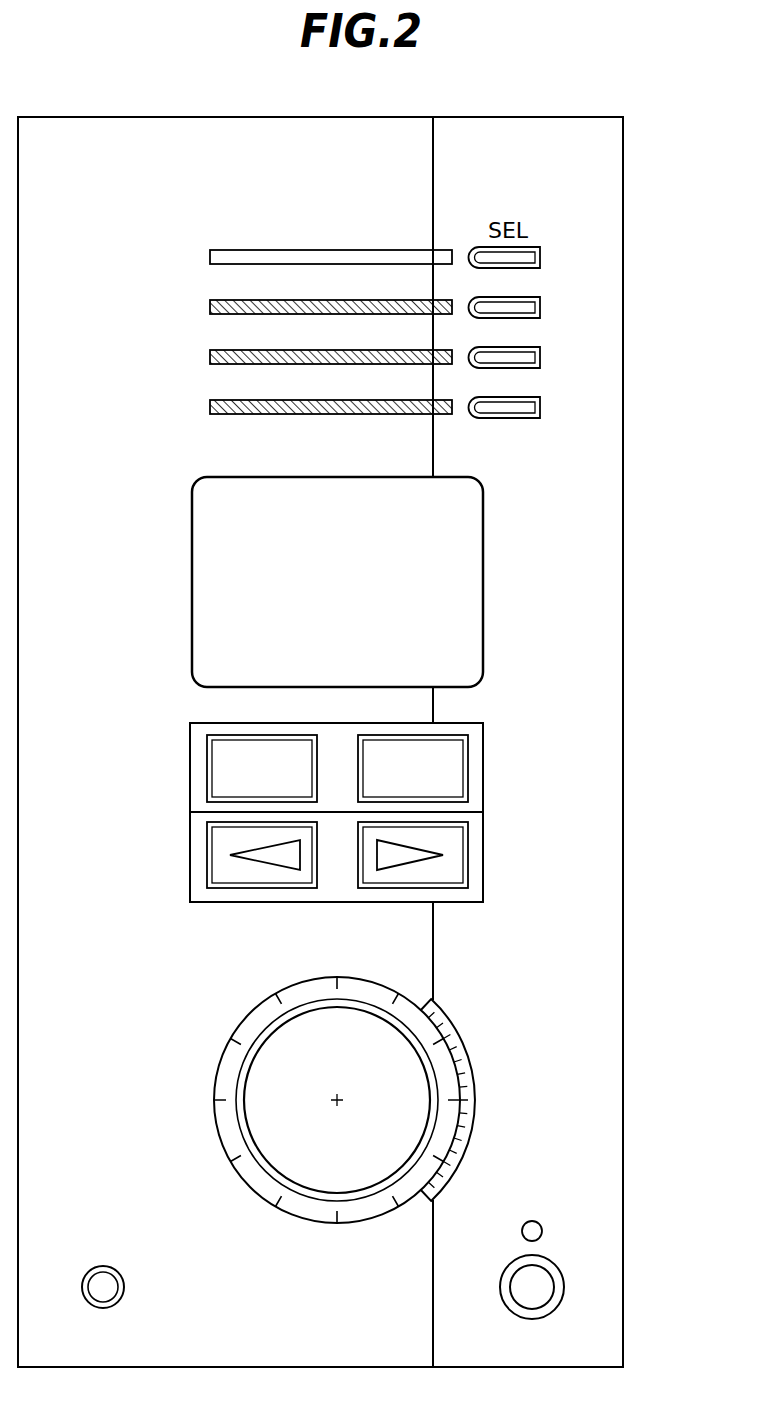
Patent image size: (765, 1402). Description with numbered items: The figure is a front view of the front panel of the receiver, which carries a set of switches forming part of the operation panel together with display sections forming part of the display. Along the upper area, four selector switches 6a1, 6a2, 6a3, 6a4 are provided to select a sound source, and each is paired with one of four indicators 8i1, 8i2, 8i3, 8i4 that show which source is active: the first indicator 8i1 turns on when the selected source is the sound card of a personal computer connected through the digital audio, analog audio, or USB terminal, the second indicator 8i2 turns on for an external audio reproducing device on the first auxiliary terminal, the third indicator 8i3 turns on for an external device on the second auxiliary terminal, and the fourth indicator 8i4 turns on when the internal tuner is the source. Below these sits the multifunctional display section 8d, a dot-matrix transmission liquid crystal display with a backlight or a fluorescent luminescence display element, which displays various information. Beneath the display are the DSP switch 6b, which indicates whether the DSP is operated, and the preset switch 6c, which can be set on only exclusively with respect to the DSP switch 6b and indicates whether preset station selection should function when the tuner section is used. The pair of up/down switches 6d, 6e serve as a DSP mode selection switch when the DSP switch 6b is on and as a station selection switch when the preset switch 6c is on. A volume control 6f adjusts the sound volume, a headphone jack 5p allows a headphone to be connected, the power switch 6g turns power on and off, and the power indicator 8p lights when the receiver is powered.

The first indicator 8i1 is at (210, 258).
The second indicator 8i2 is at (210, 308).
The third indicator 8i3 is at (210, 358).
The fourth indicator 8i4 is at (210, 408).
The selector switch 6a1 is at (540, 257).
The selector switch 6a2 is at (540, 307).
The selector switch 6a3 is at (540, 357).
The selector switch 6a4 is at (540, 407).
The multifunctional display section 8d is at (192, 537).
The DSP switch 6b is at (207, 770).
The preset switch 6c is at (468, 770).
The up/down switch 6d is at (207, 855).
The up/down switch 6e is at (468, 855).
The volume control 6f is at (250, 1012).
The headphone jack 5p is at (103, 1266).
The power indicator 8p is at (532, 1221).
The power switch 6g is at (510, 1263).